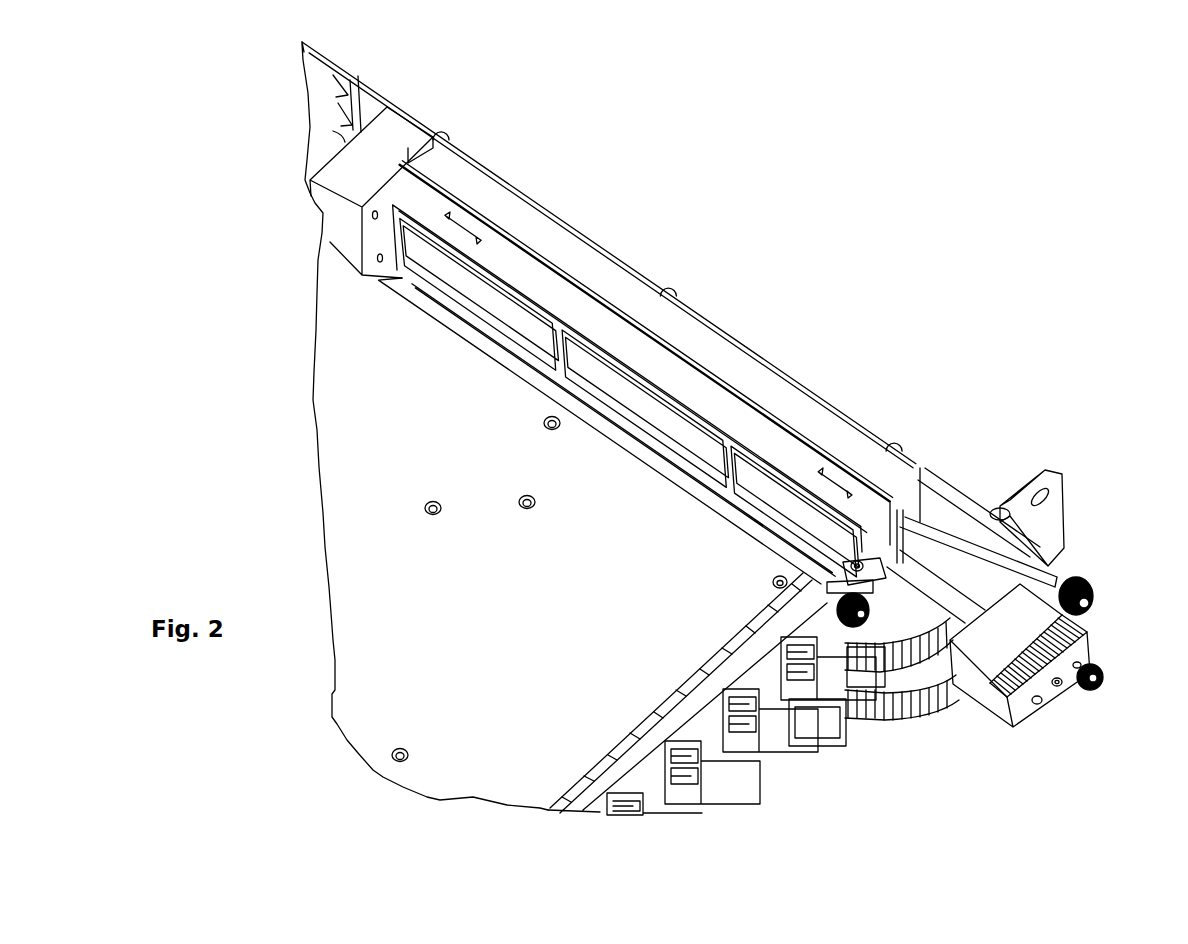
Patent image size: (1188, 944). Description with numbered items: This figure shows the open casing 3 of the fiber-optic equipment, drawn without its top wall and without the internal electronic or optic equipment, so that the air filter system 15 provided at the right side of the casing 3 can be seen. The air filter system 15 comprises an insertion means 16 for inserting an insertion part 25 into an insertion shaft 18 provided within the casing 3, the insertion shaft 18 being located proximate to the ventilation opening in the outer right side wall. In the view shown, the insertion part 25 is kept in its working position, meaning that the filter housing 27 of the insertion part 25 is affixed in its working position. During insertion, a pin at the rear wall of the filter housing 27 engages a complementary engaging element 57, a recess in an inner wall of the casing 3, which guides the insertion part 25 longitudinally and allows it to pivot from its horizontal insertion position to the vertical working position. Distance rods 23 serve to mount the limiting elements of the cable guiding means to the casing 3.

The casing 3 is at (773, 238).
The air filter system 15 is at (1073, 733).
The insertion means 16 is at (973, 703).
The insertion shaft 18 is at (407, 283).
The distance rods 23 is at (1027, 560).
The insertion part 25 is at (648, 445).
The filter housing 27 is at (527, 330).
The complementary engaging element 57 is at (330, 205).